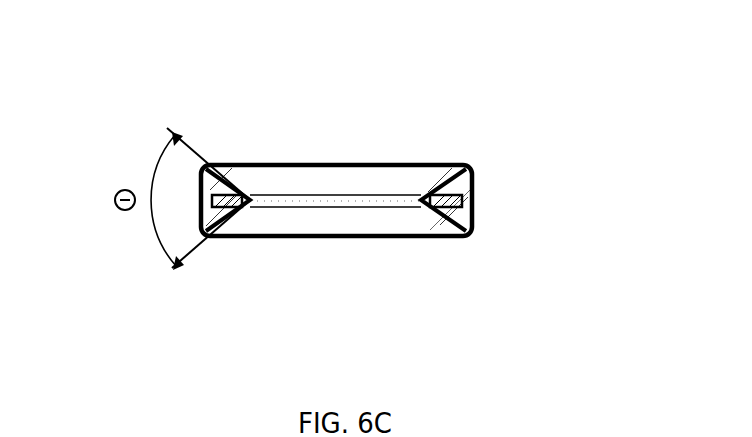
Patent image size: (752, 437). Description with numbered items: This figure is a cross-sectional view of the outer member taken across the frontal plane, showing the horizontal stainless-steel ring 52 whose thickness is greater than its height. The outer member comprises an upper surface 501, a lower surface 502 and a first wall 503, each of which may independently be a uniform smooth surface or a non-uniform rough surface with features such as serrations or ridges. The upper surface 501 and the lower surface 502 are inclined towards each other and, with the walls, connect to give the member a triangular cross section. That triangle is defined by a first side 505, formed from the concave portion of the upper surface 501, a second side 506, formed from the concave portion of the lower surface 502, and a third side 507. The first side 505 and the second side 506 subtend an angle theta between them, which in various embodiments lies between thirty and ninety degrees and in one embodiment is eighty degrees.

The stainless-steel ring 52 is at (478, 197).
The upper surface 501 is at (315, 183).
The lower surface 502 is at (373, 220).
The first wall 503 is at (300, 197).
The first side 505 is at (240, 164).
The second side 506 is at (226, 238).
The third side 507 is at (212, 201).